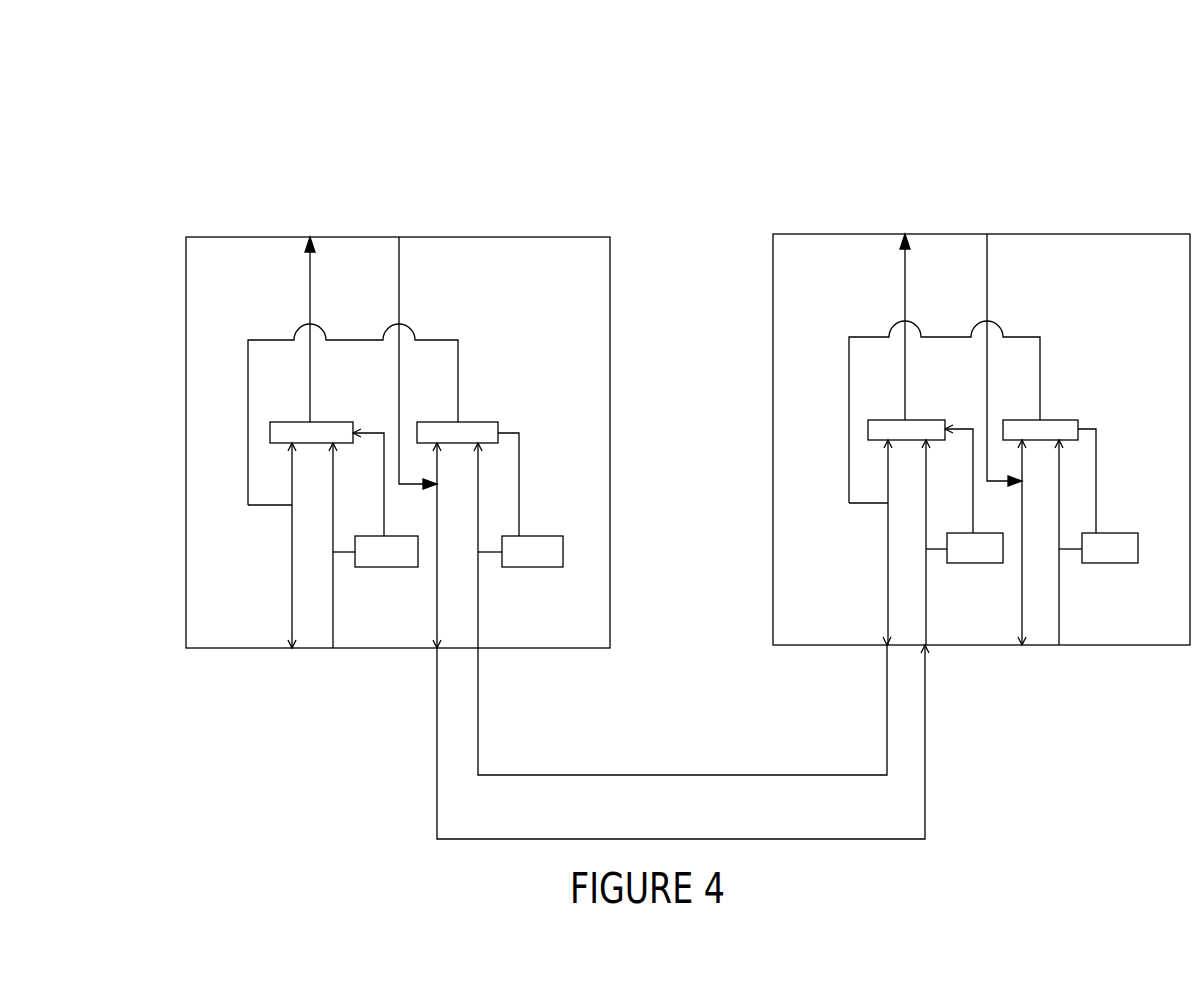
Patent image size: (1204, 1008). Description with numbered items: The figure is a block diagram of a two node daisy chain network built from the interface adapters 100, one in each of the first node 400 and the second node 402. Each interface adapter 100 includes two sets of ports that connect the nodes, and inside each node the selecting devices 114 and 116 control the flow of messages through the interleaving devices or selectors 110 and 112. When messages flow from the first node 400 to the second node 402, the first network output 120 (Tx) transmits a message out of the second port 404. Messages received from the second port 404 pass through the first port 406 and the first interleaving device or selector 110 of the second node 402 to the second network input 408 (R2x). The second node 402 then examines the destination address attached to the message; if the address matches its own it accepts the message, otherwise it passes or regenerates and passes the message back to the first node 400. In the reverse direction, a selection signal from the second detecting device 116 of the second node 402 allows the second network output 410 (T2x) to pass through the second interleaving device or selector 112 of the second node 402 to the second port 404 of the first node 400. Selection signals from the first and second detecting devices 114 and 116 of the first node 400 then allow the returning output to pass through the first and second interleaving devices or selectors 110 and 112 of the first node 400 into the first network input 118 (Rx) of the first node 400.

The interface adapter 100 is at (416, 46).
The first node 400 is at (466, 143).
The second node 402 is at (1040, 140).
The first network input 118 is at (320, 217).
The first network output 120 is at (405, 217).
The second network input 408 is at (913, 208).
The second network output 410 is at (990, 208).
The first interleaving device or selector 110 is at (324, 421).
The second interleaving device or selector 112 is at (468, 421).
The first selecting device 114 is at (398, 568).
The second selecting device 116 is at (540, 534).
The second port 404 is at (552, 670).
The first port 406 is at (812, 667).